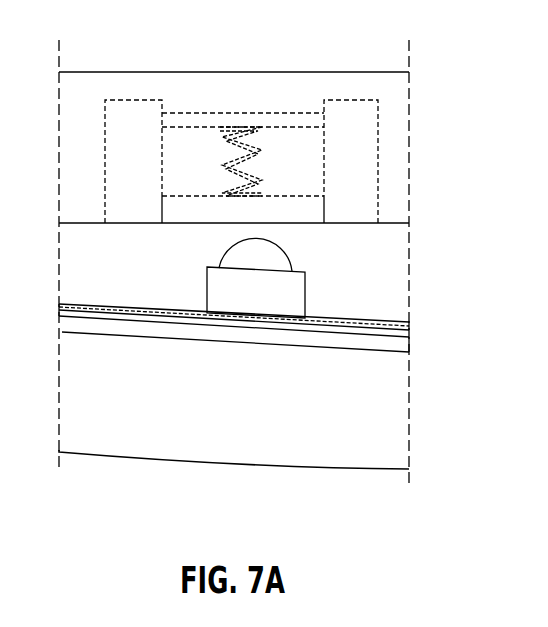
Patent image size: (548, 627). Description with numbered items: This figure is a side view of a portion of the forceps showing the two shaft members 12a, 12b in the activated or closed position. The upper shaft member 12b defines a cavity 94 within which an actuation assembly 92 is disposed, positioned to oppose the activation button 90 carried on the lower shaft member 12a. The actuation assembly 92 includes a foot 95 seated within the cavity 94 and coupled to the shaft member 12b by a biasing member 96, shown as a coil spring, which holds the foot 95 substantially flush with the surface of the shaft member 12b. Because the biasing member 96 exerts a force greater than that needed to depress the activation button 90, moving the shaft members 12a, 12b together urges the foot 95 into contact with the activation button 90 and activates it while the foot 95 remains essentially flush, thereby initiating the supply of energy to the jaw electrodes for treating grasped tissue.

The shaft member 12a is at (388, 420).
The shaft member 12b is at (388, 89).
The activation button 90 is at (278, 251).
The actuation assembly 92 is at (229, 106).
The cavity 94 is at (188, 137).
The foot 95 is at (310, 210).
The biasing member 96 is at (265, 153).